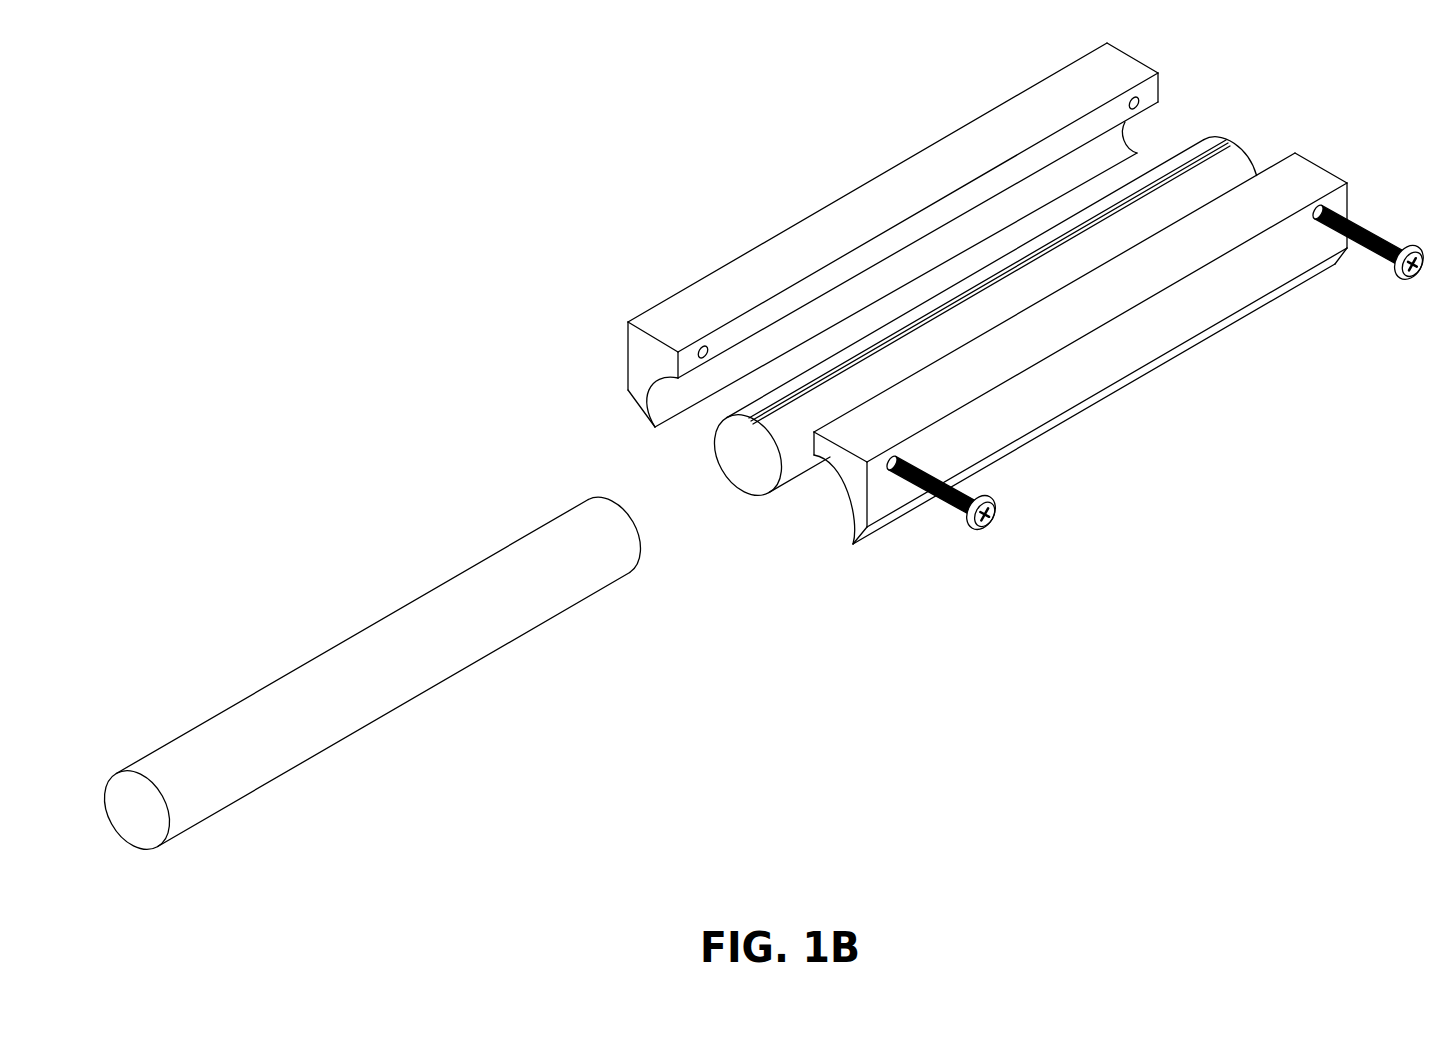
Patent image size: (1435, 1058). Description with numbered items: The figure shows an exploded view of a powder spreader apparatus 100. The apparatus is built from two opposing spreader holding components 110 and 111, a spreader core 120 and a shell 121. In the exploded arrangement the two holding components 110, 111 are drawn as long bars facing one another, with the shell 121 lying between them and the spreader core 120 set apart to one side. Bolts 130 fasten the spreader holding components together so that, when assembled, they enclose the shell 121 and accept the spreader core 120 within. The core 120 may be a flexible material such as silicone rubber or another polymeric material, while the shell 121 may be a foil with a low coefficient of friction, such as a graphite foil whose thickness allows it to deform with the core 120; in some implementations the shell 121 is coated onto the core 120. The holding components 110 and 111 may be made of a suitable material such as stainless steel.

The powder spreader apparatus 100 is at (410, 82).
The spreader holding component 110 is at (962, 143).
The spreader holding component 111 is at (1283, 187).
The spreader core 120 is at (487, 612).
The shell 121 is at (785, 499).
The bolts 130 is at (1010, 518).